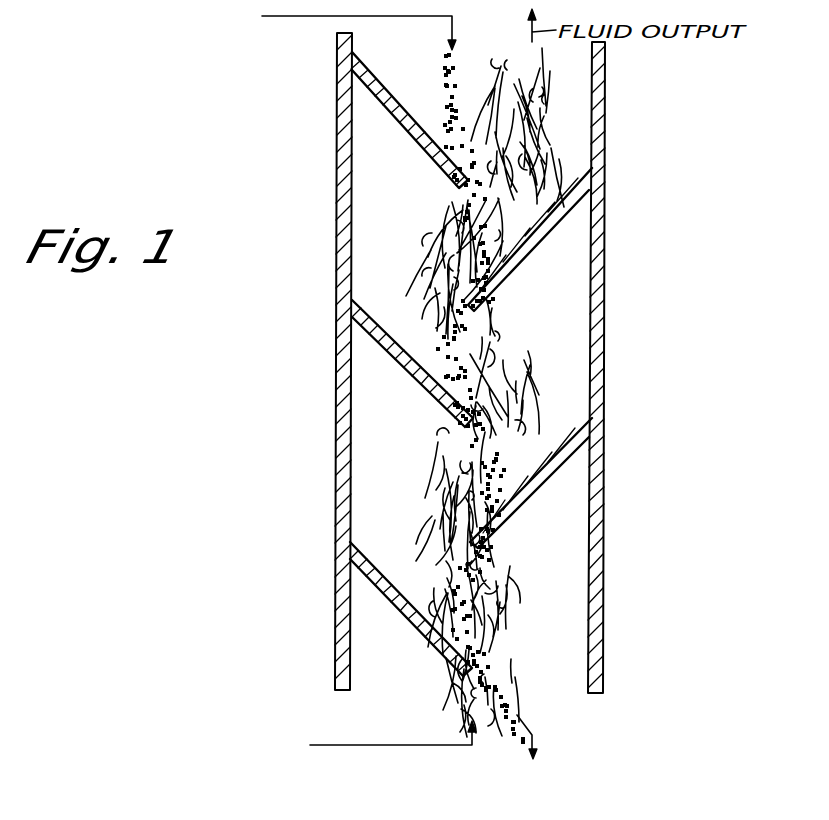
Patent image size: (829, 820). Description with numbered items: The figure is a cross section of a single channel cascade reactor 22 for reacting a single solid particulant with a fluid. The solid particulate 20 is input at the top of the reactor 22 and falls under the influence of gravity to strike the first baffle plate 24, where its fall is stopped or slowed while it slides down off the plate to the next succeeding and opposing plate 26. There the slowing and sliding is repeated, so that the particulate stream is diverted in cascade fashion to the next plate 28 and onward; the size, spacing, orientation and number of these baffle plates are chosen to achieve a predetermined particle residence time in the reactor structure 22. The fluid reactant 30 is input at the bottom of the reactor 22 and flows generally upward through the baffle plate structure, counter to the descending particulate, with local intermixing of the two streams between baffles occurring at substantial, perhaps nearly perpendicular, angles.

The solid particulate 20 is at (448, 45).
The reactor 22 is at (619, 355).
The first baffle plate 24 is at (393, 118).
The opposing plate 26 is at (560, 221).
The next plate 28 is at (380, 348).
The fluid reactant 30 is at (425, 745).